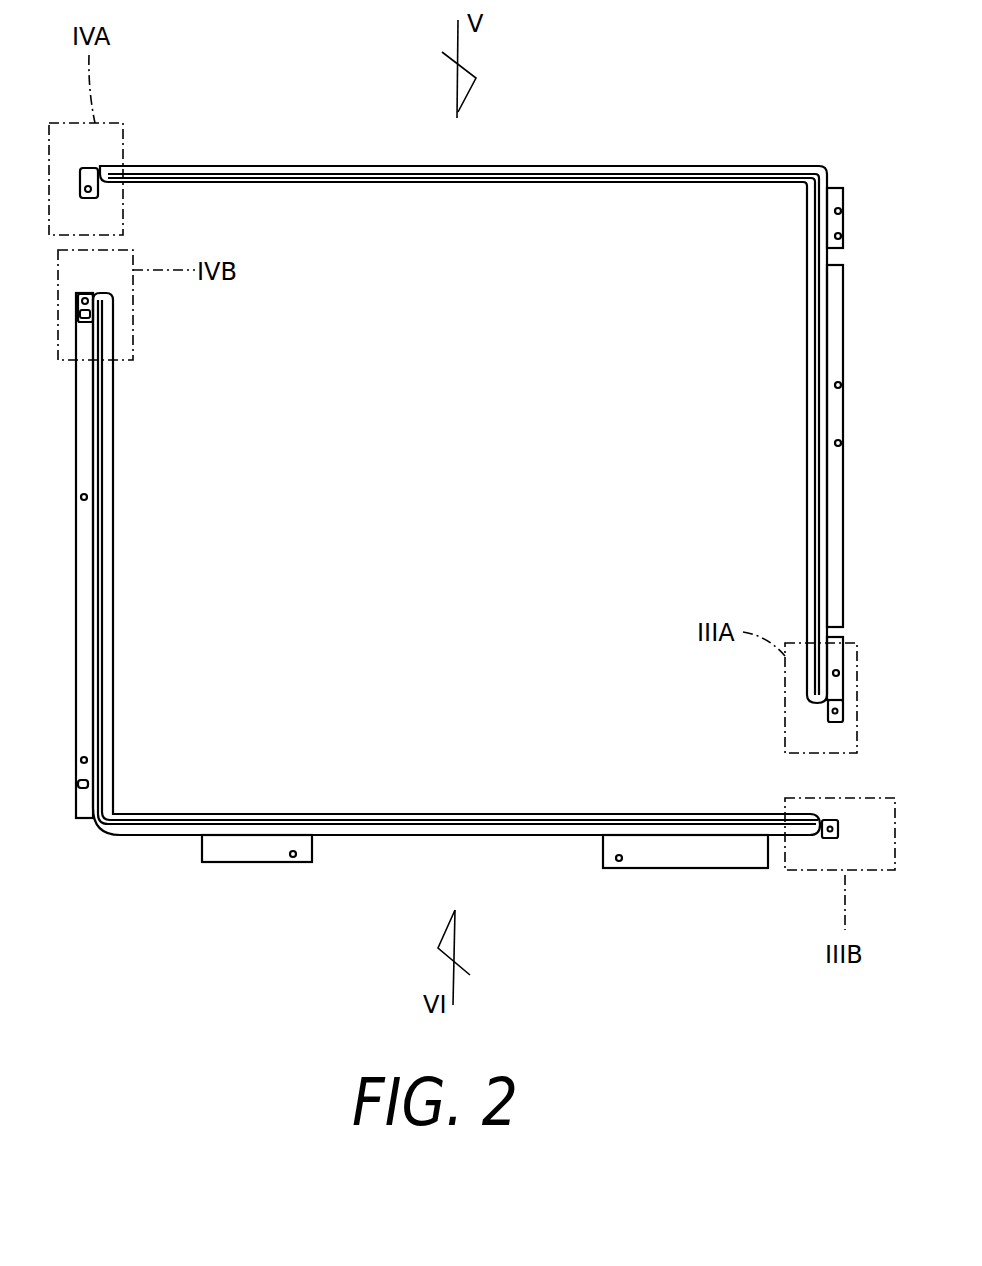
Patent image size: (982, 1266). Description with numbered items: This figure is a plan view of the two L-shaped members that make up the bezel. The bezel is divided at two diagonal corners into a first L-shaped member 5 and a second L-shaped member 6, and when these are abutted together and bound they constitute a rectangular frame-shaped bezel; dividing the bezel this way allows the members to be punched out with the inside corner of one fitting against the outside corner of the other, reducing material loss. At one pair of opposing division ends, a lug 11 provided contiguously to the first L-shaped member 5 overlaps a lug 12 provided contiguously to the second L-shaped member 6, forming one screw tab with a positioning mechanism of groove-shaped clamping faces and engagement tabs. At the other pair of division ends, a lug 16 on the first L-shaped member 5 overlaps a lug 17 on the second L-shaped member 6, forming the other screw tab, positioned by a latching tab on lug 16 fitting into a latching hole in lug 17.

The first L-shaped member 5 is at (614, 166).
The second L-shaped member 6 is at (540, 840).
The lug 11 is at (828, 711).
The lug 12 is at (826, 840).
The lug 16 is at (100, 190).
The lug 17 is at (100, 304).